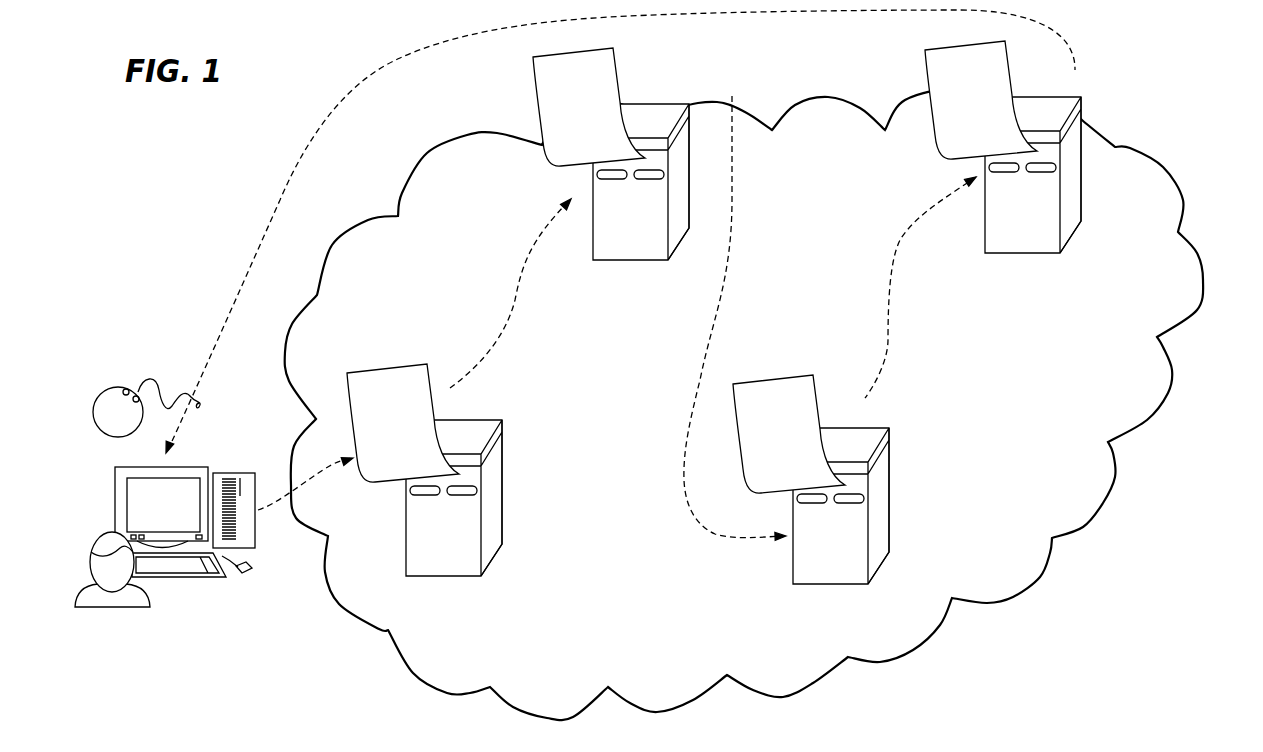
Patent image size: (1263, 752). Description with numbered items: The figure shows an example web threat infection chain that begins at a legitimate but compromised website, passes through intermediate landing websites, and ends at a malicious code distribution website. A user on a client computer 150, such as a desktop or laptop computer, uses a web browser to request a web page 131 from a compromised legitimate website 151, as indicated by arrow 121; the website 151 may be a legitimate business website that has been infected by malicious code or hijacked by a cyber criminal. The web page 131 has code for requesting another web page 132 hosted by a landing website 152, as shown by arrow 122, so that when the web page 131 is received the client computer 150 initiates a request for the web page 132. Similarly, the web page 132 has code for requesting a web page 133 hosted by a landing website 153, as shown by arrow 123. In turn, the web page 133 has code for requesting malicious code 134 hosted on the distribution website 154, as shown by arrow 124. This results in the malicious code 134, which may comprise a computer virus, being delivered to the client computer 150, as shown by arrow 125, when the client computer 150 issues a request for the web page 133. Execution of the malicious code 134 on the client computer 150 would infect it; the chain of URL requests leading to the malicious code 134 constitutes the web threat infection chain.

The arrow 121 is at (285, 502).
The arrow 122 is at (516, 318).
The arrow 123 is at (703, 523).
The arrow 124 is at (890, 322).
The arrow 125 is at (395, 57).
The web page 131 is at (403, 370).
The web page 132 is at (548, 64).
The web page 133 is at (777, 388).
The malicious code 134 is at (947, 58).
The client computer 150 is at (183, 578).
The compromised legitimate website 151 is at (492, 528).
The landing website 152 is at (677, 233).
The landing website 153 is at (880, 520).
The distribution website 154 is at (1070, 190).